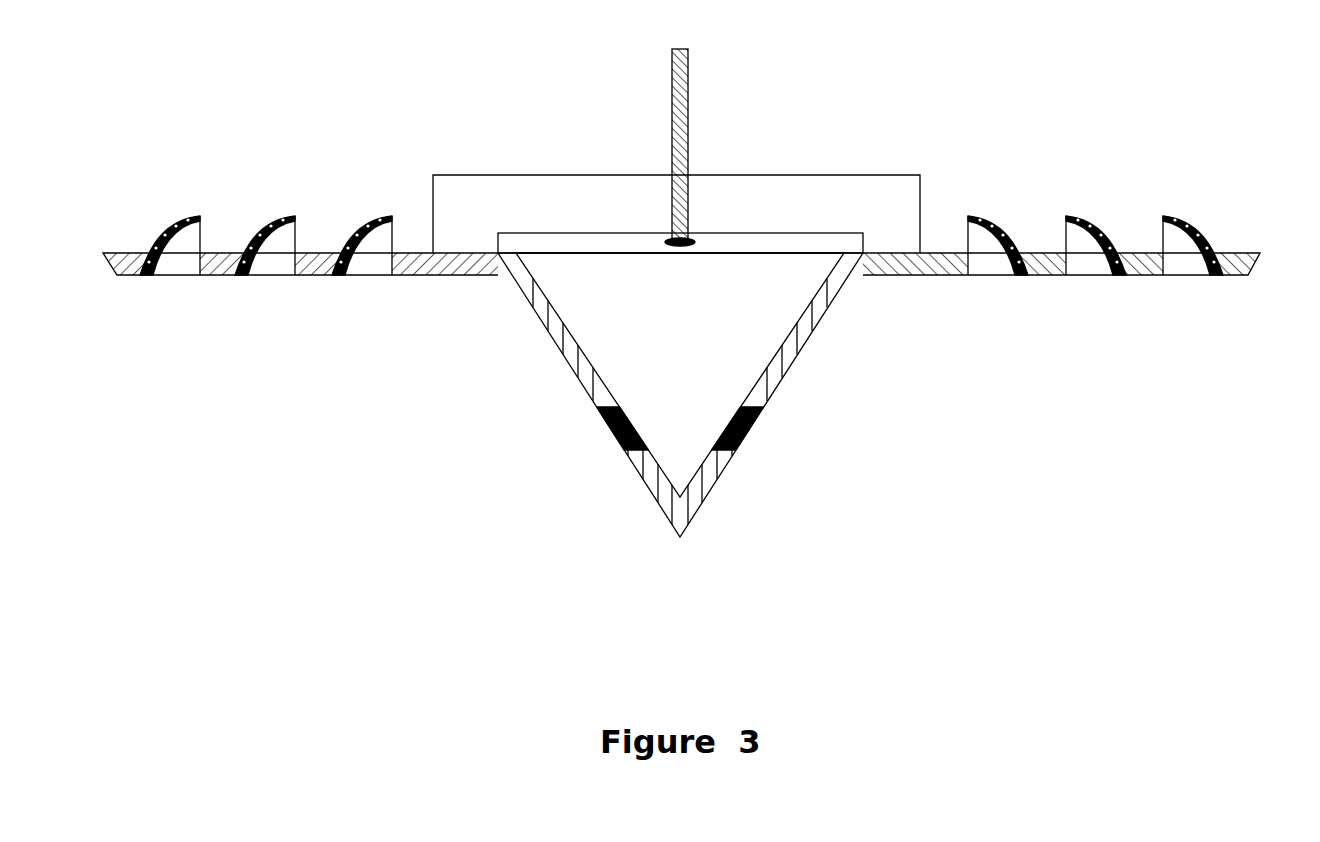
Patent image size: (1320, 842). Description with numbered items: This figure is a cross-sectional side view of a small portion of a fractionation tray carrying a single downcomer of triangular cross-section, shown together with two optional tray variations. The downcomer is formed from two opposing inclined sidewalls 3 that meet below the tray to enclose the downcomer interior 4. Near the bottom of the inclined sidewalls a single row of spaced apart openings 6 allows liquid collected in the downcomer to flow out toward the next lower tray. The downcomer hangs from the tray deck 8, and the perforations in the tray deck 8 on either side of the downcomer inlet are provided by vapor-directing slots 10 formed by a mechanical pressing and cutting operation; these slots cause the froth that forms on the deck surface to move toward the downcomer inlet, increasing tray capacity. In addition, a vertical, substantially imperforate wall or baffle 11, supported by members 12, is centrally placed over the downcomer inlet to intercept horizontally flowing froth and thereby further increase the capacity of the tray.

The inclined sidewall 3 is at (680, 395).
The cone chamber 4 is at (680, 242).
The spaced apart openings 6 is at (684, 457).
The tray deck 8 is at (695, 244).
The vapor-directing slots 10 is at (1163, 212).
The baffle 11 is at (708, 147).
The members 12 is at (673, 193).